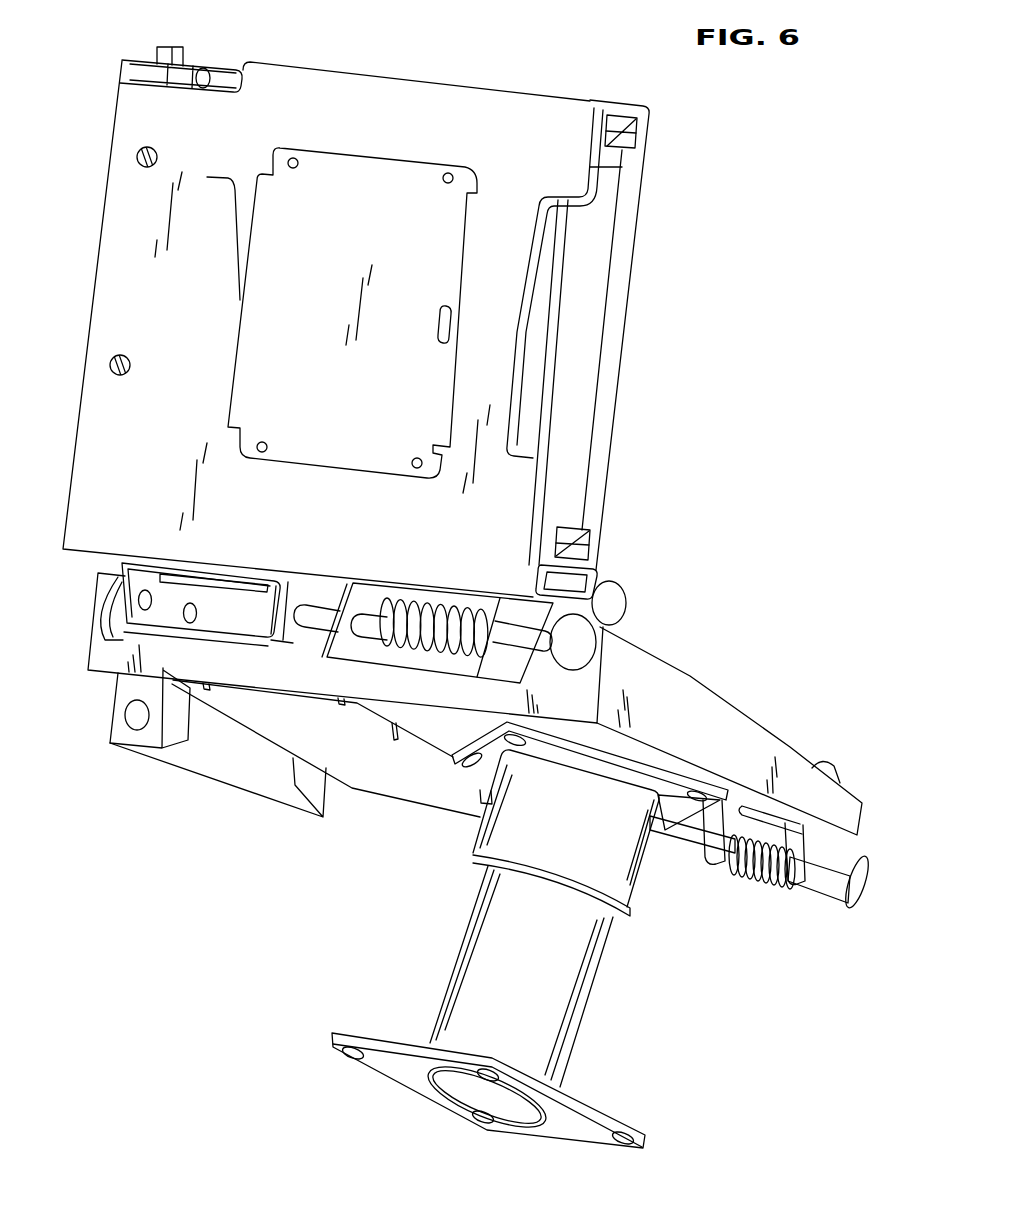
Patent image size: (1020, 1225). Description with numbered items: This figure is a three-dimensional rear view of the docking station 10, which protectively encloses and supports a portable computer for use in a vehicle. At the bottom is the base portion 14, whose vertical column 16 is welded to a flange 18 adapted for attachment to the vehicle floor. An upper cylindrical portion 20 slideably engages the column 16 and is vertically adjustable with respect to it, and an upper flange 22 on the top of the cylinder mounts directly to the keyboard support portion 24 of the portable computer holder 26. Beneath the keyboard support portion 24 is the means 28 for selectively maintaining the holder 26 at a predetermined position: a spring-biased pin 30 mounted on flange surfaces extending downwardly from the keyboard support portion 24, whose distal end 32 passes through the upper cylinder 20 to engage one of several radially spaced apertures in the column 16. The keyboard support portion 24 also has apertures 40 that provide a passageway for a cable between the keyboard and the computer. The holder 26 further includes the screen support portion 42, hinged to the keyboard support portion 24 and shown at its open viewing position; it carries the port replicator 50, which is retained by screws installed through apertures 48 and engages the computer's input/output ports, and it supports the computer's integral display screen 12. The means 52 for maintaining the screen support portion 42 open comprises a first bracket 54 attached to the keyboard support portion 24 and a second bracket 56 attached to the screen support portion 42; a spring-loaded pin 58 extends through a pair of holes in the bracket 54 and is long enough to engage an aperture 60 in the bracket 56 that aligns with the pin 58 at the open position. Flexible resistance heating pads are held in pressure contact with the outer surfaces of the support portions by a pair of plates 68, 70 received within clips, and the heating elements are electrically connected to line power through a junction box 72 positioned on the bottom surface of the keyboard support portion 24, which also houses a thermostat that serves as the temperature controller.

The docking station 10 is at (676, 390).
The display screen 12 is at (678, 189).
The base portion 14 is at (667, 1016).
The vertical column 16 is at (517, 1033).
The flange 18 is at (573, 1127).
The upper cylindrical portion 20 is at (597, 862).
The upper flange 22 is at (495, 758).
The keyboard support portion 24 is at (668, 700).
The portable computer holder 26 is at (77, 572).
The means for selectively maintaining the holder at a predetermined position 28 is at (754, 900).
The spring-biased pin 30 is at (810, 877).
The distal end 32 is at (670, 840).
The apertures 40 is at (93, 643).
The screen support portion 42 is at (133, 255).
The apertures 48 is at (137, 155).
The port replicator 50 is at (132, 73).
The means for maintaining the screen support portion at an open position 52 is at (296, 677).
The first bracket 54 is at (402, 660).
The second bracket 56 is at (207, 613).
The spring-loaded pin 58 is at (327, 612).
The aperture 60 is at (320, 612).
The plate 68 is at (338, 730).
The plate 70 is at (357, 210).
The junction box 72 is at (198, 765).